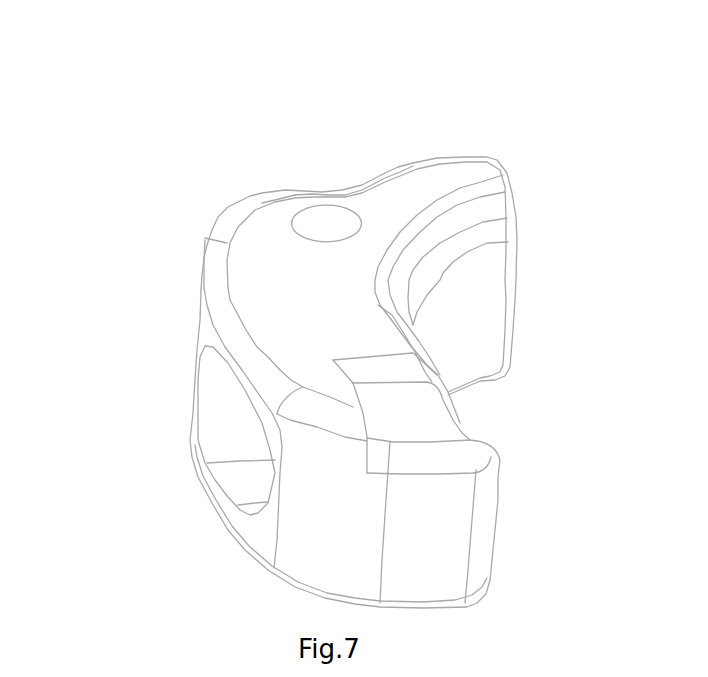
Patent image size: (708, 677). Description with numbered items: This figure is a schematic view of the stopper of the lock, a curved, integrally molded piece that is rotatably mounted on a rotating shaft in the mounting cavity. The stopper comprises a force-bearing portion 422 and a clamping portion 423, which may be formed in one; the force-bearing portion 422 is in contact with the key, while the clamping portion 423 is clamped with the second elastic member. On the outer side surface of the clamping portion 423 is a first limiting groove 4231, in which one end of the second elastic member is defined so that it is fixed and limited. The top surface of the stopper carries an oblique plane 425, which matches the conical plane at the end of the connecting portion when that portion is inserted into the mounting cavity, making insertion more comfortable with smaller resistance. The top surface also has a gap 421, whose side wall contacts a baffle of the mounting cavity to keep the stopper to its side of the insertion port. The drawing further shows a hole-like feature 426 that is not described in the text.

The gap 421 is at (417, 423).
The force-bearing portion 422 is at (445, 163).
The clamping portion 423 is at (228, 293).
The first limiting groove 4231 is at (230, 428).
The oblique plane 425 is at (400, 310).
The elliptical hole 426 is at (302, 212).